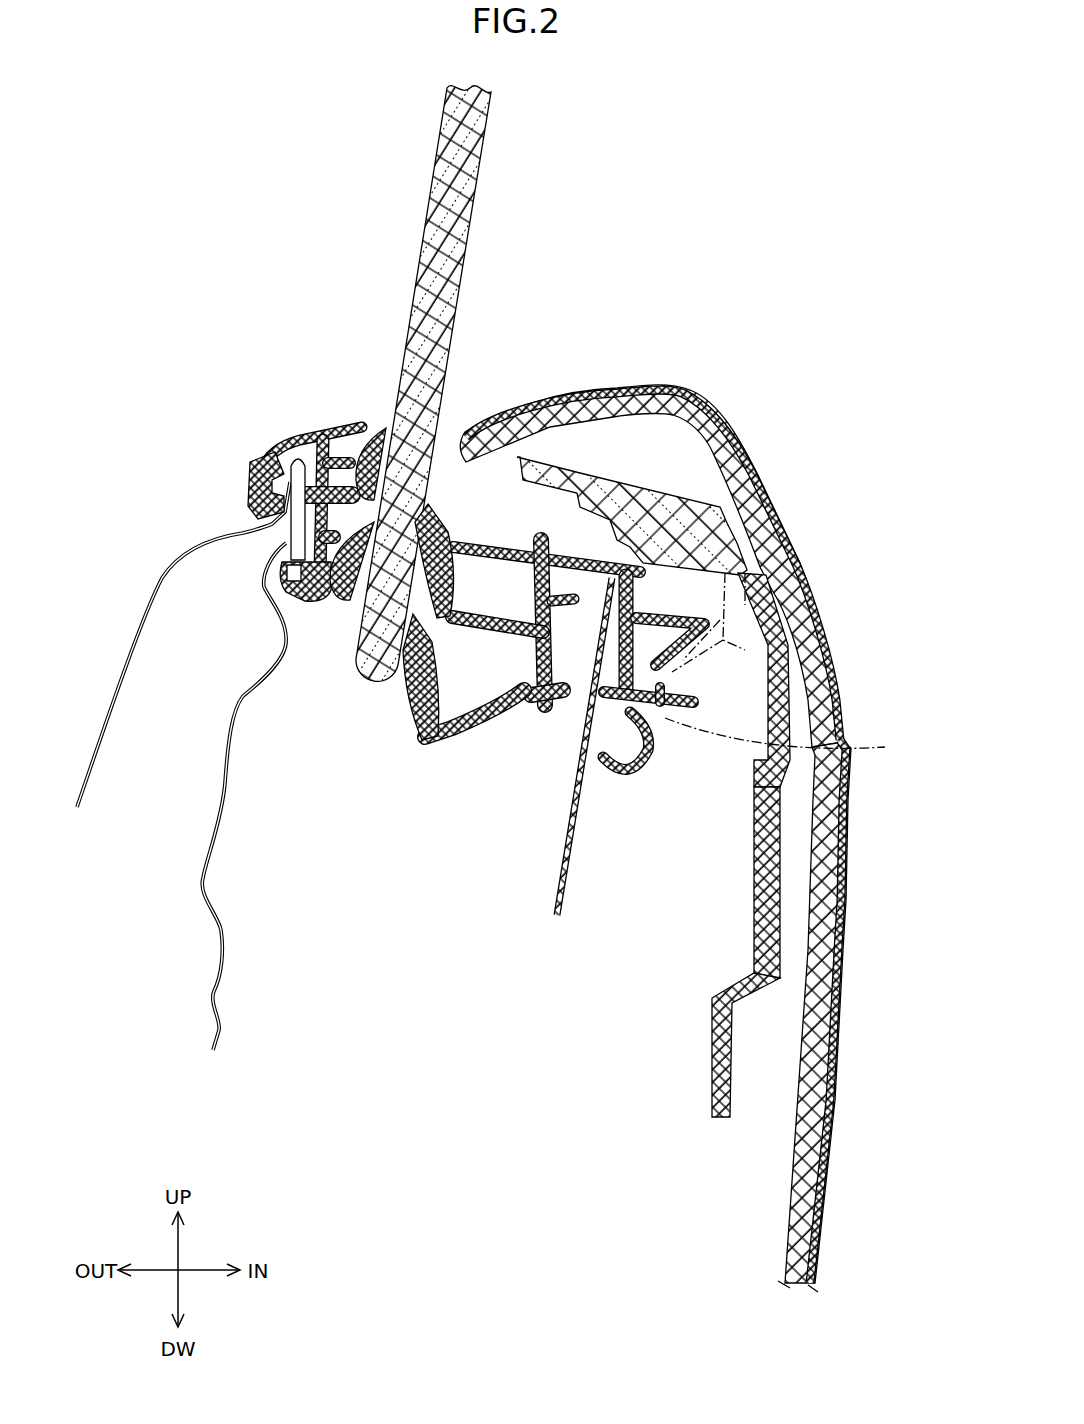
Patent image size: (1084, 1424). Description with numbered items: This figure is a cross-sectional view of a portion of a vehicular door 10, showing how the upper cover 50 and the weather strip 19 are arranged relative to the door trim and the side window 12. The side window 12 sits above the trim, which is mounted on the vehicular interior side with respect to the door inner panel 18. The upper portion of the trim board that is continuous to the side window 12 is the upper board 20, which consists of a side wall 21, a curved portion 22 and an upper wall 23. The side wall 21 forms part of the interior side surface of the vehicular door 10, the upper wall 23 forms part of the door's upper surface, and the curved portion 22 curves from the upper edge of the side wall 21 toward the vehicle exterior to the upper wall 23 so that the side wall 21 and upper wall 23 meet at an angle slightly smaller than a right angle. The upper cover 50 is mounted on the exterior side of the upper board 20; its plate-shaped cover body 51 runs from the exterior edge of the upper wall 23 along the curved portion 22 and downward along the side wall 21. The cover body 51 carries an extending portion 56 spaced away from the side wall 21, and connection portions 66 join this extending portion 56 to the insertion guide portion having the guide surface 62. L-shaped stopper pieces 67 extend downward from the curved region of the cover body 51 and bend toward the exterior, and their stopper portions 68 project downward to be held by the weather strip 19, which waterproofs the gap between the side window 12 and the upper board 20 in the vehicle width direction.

The vehicular door 10 is at (336, 287).
The side window 12 is at (458, 240).
The door inner panel 18 is at (575, 843).
The weather strip 19 is at (455, 735).
The upper board 20 is at (684, 523).
The side wall 21 is at (832, 808).
The curved portion 22 is at (680, 405).
The upper wall 23 is at (611, 405).
The upper cover 50 is at (779, 845).
The cover body 51 is at (660, 515).
The extending portion 56 is at (780, 697).
The guide surface 62 is at (718, 1055).
The connection portion 66 is at (760, 921).
The stopper piece 67 is at (780, 643).
The stopper portion 68 is at (794, 738).